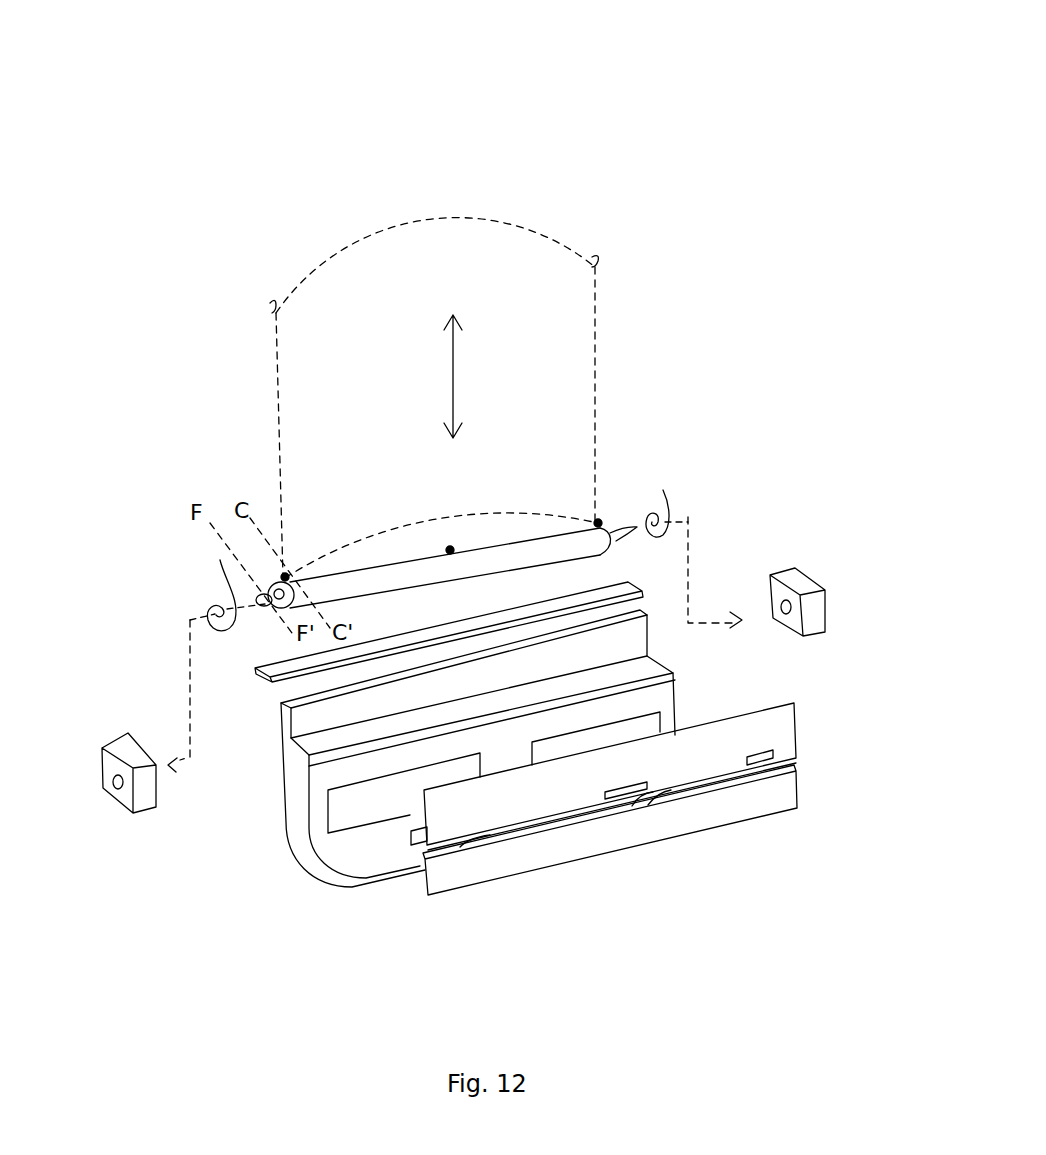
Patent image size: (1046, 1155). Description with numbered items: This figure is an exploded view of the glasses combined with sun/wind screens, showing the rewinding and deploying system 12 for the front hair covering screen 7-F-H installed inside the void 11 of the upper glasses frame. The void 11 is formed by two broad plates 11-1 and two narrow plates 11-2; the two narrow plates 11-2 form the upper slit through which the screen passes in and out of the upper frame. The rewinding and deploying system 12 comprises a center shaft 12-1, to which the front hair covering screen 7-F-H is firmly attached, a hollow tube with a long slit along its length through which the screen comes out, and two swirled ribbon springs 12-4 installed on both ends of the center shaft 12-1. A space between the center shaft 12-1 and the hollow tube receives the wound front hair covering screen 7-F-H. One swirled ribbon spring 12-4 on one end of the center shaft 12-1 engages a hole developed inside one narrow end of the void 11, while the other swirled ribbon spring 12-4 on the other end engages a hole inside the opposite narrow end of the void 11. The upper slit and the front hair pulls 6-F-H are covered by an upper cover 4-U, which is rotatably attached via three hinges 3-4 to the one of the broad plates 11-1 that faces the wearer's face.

The front hair pulls 6-F-H is at (443, 218).
The front hair covering screen 7-F-H is at (583, 296).
The rewinding and deploying system 12 is at (550, 470).
The center shaft 12-1 is at (265, 597).
The swirled ribbon springs 12-4 is at (665, 492).
The void 11 is at (323, 743).
The narrow plates 11-2 is at (348, 542).
The upper cover 4-U is at (780, 742).
The hinges 3-4 is at (748, 766).
The broad plates 11-1 is at (663, 817).